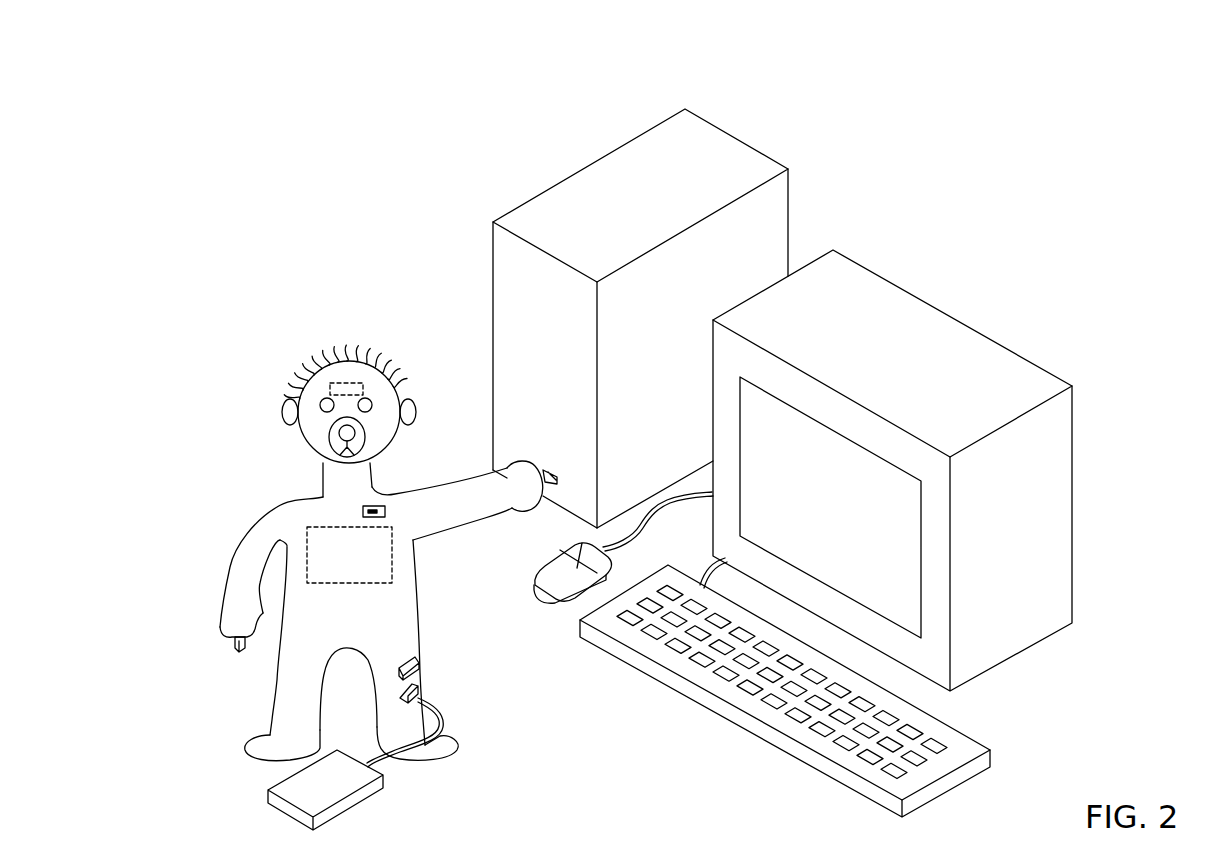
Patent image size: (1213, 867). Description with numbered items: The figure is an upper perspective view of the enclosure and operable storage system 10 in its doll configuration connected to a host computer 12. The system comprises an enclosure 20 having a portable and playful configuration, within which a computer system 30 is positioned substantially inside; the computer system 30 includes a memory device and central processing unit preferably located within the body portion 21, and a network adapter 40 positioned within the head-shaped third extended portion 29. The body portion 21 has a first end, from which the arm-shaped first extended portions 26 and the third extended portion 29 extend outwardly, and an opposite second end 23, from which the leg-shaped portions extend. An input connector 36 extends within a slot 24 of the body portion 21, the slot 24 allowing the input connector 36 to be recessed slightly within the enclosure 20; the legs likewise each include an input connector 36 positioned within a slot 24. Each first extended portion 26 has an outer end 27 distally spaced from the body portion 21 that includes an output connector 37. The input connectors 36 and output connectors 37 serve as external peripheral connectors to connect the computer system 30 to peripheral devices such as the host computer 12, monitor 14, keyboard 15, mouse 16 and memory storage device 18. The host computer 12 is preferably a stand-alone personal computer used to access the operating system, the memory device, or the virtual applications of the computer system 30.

The enclosure and operable storage system 10 is at (198, 180).
The host computer 12 is at (503, 305).
The monitor 14 is at (968, 348).
The keyboard 15 is at (847, 760).
The mouse 16 is at (545, 578).
The memory storage device 18 is at (342, 790).
The enclosure 20 is at (292, 484).
The body portion 21 is at (350, 607).
The second end 23 is at (337, 628).
The slot 24 is at (387, 510).
The first extended portions 26 is at (237, 578).
The outer end 27 is at (223, 623).
The third extended portion 29 is at (323, 350).
The computer system 30 is at (293, 528).
The input connector 36 is at (377, 507).
The output connector 37 is at (238, 650).
The network adapter 40 is at (312, 396).